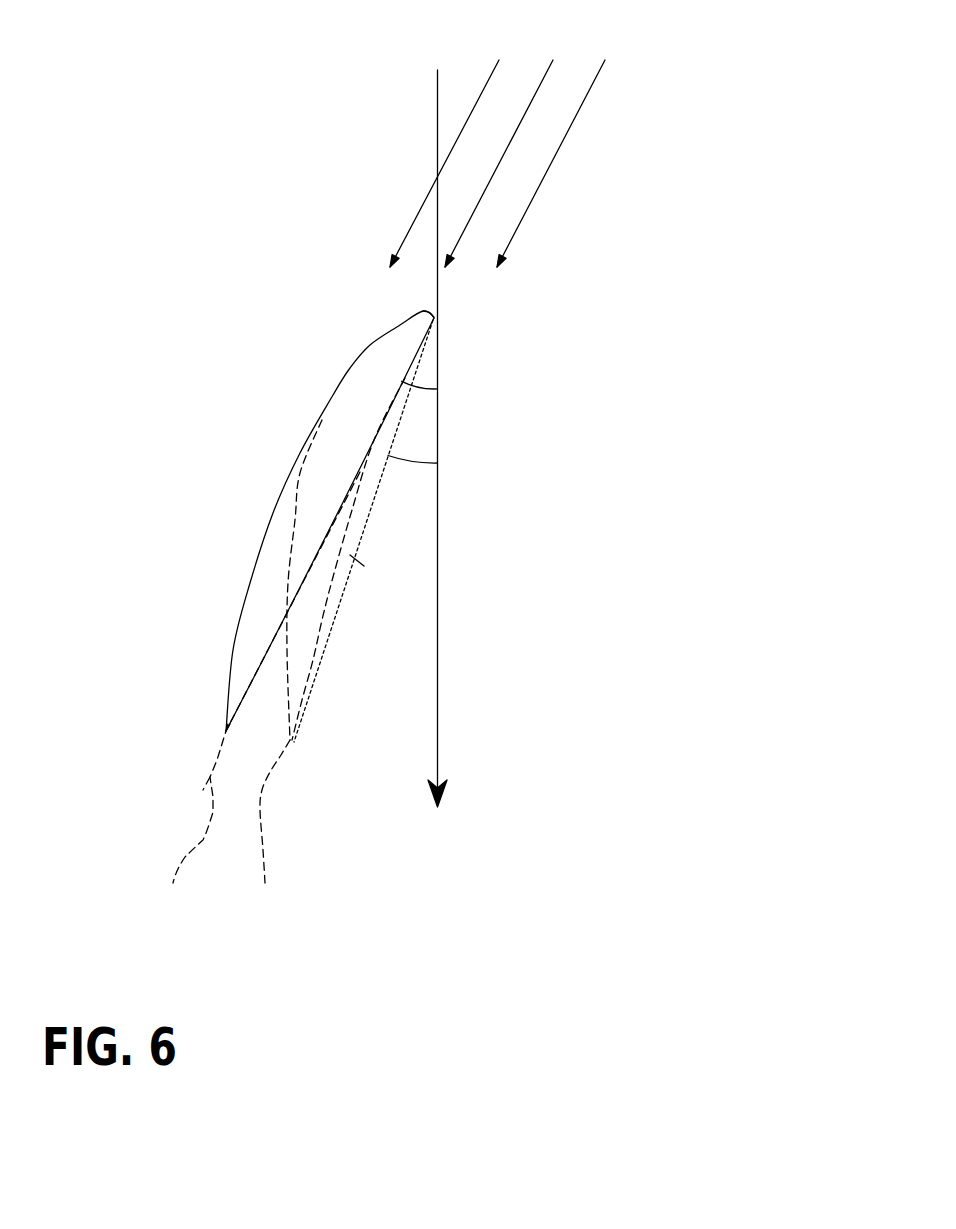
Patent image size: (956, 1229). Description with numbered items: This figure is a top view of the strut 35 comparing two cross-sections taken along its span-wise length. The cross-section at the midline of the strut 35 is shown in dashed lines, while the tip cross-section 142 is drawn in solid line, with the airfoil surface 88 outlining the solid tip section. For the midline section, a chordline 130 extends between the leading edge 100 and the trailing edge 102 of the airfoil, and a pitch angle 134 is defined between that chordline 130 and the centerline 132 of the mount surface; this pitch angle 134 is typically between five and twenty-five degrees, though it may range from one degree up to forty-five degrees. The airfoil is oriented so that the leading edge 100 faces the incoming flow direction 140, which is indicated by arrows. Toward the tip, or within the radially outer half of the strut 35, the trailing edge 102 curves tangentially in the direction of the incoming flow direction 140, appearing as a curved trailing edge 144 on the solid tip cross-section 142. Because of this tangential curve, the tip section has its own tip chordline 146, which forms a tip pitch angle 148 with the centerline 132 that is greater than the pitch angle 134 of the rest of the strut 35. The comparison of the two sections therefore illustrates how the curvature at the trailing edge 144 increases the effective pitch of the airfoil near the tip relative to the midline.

The incoming flow direction 140 is at (560, 140).
The centerline 132 is at (438, 603).
The vane airfoil 88 is at (272, 521).
The tip cross-section 142 is at (250, 585).
The leading edge 100 is at (434, 317).
The curved trailing edge 144 is at (226, 732).
The tip pitch angle 148 is at (413, 393).
The pitch angle 134 is at (410, 467).
The strut 35 is at (357, 560).
The chordline 130 is at (323, 657).
The trailing edge 102 is at (282, 673).
The tip chordline 146 is at (251, 695).